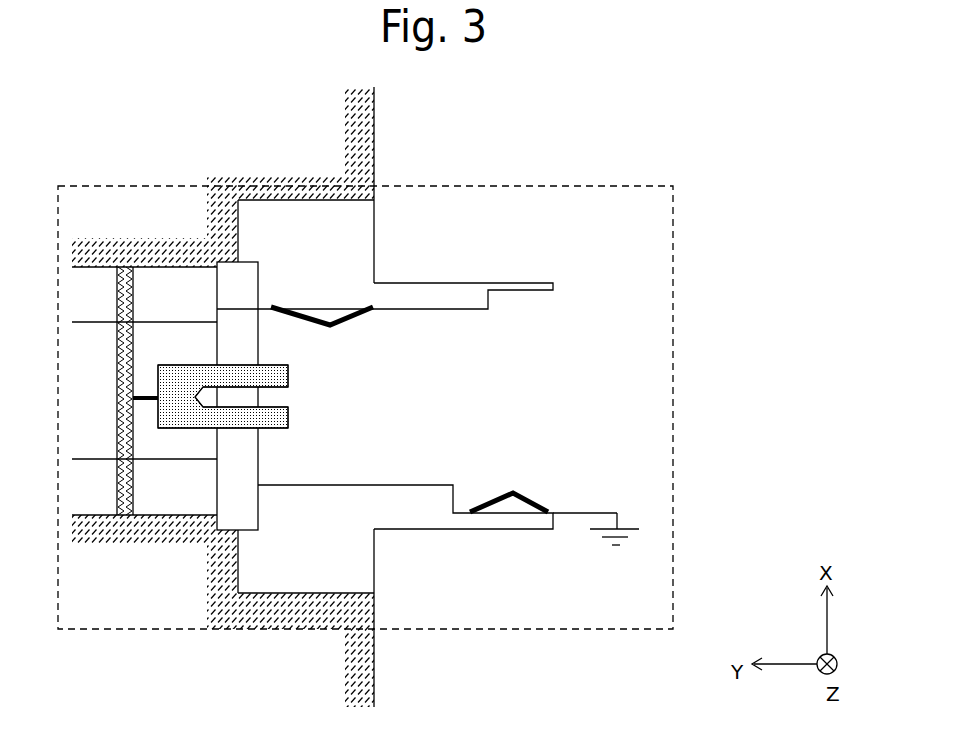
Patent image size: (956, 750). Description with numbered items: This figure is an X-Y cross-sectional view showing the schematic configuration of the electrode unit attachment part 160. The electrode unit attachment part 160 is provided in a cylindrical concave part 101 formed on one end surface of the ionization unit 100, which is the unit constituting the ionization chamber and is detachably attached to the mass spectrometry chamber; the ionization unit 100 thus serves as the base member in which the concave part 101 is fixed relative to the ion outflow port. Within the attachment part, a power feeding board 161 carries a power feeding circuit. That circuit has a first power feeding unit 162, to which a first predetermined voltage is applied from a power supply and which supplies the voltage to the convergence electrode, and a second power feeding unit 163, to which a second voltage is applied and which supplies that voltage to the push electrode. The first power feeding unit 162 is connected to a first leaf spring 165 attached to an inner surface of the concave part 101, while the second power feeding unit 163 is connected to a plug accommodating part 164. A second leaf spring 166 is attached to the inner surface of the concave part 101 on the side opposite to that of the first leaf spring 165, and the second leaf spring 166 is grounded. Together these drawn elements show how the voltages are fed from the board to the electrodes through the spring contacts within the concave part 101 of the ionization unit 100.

The ionization unit 100 is at (375, 657).
The cylindrical concave part 101 is at (363, 442).
The electrode unit attachment part 160 is at (673, 286).
The power feeding board 161 is at (125, 518).
The first power feeding unit 162 is at (135, 322).
The second power feeding unit 163 is at (136, 401).
The plug accommodating part 164 is at (288, 418).
The first leaf spring 165 is at (338, 330).
The second leaf spring 166 is at (520, 491).